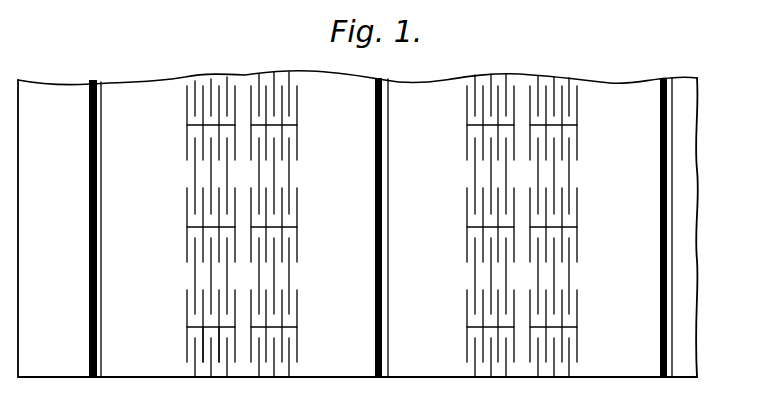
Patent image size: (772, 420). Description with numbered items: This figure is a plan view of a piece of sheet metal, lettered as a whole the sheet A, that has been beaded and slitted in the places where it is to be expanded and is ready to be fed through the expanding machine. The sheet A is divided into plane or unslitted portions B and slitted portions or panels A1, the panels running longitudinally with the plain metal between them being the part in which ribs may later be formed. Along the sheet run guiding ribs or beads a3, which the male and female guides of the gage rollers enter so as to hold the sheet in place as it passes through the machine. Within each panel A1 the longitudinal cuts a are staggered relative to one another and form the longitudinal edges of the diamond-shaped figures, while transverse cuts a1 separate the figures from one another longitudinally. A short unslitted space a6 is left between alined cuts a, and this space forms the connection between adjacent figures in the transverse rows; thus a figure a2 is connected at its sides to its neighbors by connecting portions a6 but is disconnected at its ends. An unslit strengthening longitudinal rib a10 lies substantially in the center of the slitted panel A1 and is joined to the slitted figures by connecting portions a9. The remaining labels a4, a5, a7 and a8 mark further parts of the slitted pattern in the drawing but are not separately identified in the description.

The longitudinal cuts a is at (275, 170).
The transverse cuts a1 is at (295, 228).
The figure a2 is at (282, 250).
The guiding ribs or beads a3 is at (660, 298).
The lower slot portions a4 is at (287, 370).
The slot strips a5 is at (310, 385).
The unslitted space a6 is at (310, 282).
The bottom strips a7 is at (188, 376).
The upper strips a8 is at (188, 292).
The connecting portions a9 is at (193, 337).
The strengthening longitudinal rib a10 is at (243, 88).
The sheet A is at (683, 88).
The slitted portions or panels A1 is at (522, 80).
The plane or unslitted portions B is at (385, 377).